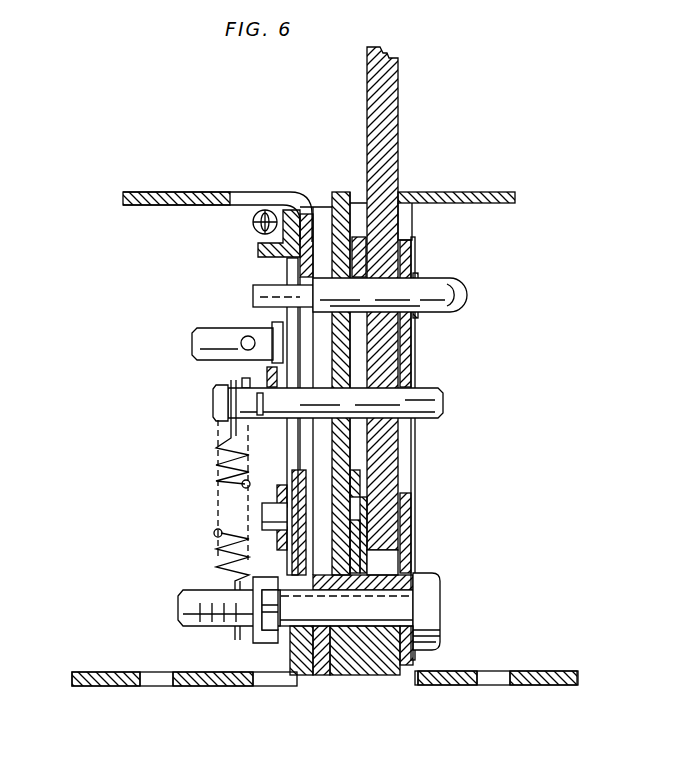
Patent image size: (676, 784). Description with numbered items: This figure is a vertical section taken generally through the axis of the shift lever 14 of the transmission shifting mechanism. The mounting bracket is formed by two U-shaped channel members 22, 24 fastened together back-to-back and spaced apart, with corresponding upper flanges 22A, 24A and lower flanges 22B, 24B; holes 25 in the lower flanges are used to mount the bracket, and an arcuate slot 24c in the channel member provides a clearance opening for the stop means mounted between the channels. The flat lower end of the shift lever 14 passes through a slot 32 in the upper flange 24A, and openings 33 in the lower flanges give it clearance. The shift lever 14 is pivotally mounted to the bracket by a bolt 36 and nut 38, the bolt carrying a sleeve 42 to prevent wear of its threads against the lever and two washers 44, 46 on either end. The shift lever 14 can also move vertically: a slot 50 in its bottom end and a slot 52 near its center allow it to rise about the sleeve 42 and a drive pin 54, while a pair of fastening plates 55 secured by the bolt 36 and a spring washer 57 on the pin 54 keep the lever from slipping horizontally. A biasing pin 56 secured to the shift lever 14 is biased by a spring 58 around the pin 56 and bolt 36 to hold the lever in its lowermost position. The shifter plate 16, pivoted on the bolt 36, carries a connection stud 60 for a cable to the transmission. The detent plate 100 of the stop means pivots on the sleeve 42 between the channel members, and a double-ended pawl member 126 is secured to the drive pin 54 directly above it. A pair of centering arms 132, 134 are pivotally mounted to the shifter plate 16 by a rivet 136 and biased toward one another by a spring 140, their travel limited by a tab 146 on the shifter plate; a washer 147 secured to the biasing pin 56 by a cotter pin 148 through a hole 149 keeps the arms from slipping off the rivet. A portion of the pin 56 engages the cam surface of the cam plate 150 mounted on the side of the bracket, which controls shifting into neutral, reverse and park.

The shift lever 14 is at (398, 134).
The shifter plate 16 is at (298, 312).
The channel member 22 is at (305, 676).
The upper flange 22A is at (150, 191).
The lower flange 22B is at (110, 687).
The channel member 24 is at (340, 678).
The upper flange 24A is at (466, 192).
The lower flange 24B is at (563, 671).
The arcuate slot 24c is at (360, 262).
The hole 25 is at (145, 687).
The slot 32 is at (357, 196).
The opening 33 is at (273, 687).
The bolt 36 is at (432, 606).
The nut 38 is at (262, 622).
The sleeve 42 is at (415, 565).
The washer 44 is at (415, 652).
The washer 46 is at (265, 644).
The slot 50 is at (395, 552).
The slot 52 is at (400, 222).
The drive pin 54 is at (468, 300).
The fastening plate 55 is at (410, 345).
The biasing pin 56 is at (445, 400).
The spring washer 57 is at (418, 266).
The spring 58 is at (215, 447).
The connection stud 60 is at (215, 346).
The detent plate 100 is at (327, 677).
The double-ended pawl member 126 is at (320, 232).
The centering arm 132 is at (298, 268).
The centering arm 134 is at (232, 580).
The rivet 136 is at (262, 518).
The spring 140 is at (252, 222).
The tab 146 is at (258, 245).
The washer 147 is at (262, 370).
The cotter pin 148 is at (244, 386).
The hole 149 is at (256, 402).
The cam plate 150 is at (357, 480).